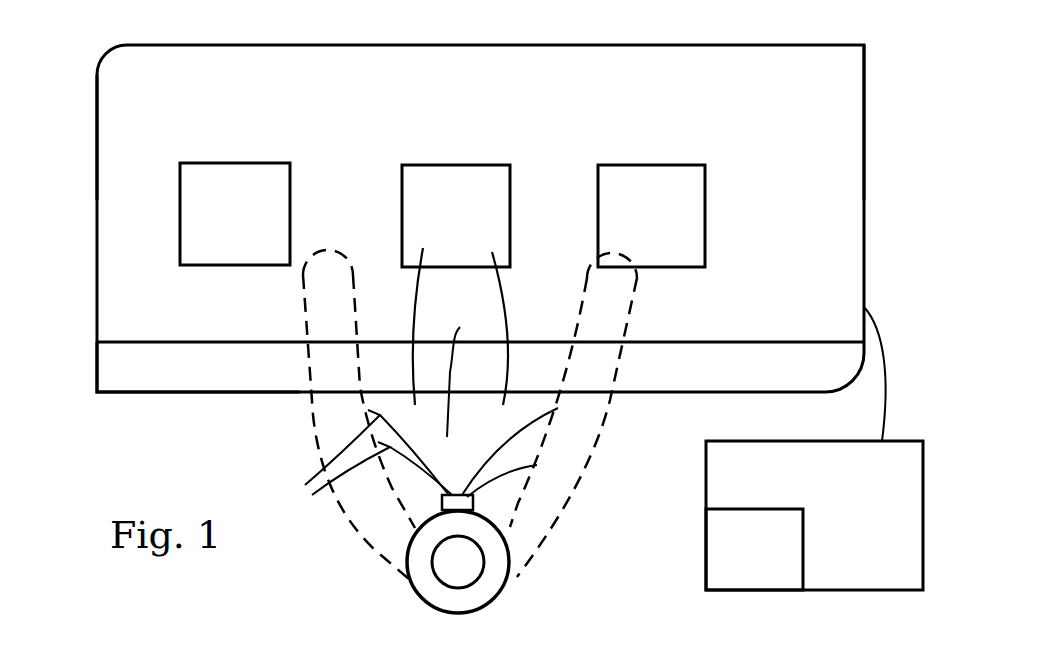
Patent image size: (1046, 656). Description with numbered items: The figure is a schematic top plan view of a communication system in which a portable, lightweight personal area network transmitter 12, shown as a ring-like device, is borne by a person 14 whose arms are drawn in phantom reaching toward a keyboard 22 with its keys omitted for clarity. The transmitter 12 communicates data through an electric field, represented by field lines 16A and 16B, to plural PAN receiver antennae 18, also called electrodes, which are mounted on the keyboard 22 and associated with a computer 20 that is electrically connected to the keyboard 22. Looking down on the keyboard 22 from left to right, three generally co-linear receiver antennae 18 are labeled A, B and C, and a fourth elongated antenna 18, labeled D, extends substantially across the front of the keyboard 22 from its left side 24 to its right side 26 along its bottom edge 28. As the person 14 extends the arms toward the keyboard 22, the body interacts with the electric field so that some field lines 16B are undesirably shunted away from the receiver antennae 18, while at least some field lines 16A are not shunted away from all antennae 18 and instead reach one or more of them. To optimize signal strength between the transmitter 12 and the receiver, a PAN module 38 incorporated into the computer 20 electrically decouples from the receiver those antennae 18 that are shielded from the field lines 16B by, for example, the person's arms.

The personal area network (PAN) transmitter 12 is at (442, 502).
The person 14 is at (477, 595).
The electric field lines 16A is at (413, 316).
The electric field lines 16B is at (358, 462).
The PAN receiver antennae 18 is at (218, 167).
The computer 20 is at (904, 447).
The keyboard 22 is at (853, 107).
The left side 24 is at (97, 158).
The right side 26 is at (865, 156).
The bottom edge 28 is at (135, 393).
The PAN module 38 is at (710, 563).